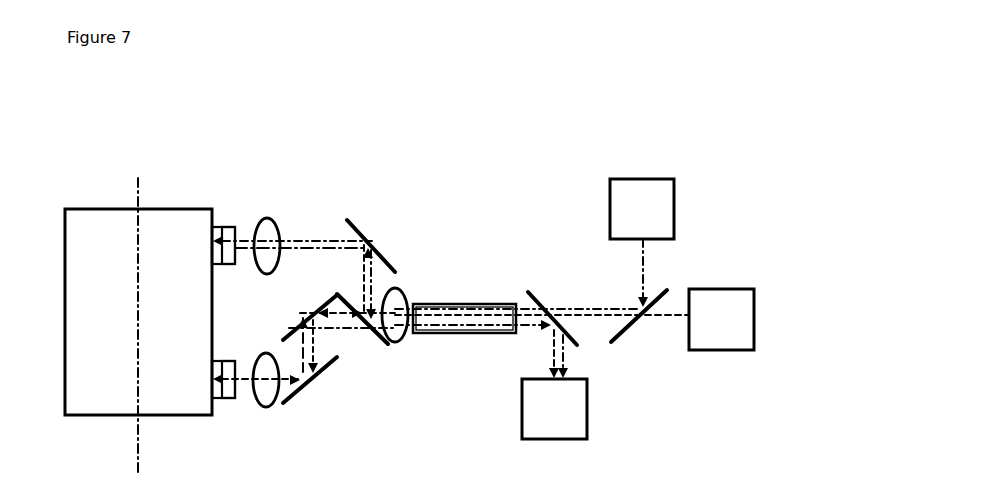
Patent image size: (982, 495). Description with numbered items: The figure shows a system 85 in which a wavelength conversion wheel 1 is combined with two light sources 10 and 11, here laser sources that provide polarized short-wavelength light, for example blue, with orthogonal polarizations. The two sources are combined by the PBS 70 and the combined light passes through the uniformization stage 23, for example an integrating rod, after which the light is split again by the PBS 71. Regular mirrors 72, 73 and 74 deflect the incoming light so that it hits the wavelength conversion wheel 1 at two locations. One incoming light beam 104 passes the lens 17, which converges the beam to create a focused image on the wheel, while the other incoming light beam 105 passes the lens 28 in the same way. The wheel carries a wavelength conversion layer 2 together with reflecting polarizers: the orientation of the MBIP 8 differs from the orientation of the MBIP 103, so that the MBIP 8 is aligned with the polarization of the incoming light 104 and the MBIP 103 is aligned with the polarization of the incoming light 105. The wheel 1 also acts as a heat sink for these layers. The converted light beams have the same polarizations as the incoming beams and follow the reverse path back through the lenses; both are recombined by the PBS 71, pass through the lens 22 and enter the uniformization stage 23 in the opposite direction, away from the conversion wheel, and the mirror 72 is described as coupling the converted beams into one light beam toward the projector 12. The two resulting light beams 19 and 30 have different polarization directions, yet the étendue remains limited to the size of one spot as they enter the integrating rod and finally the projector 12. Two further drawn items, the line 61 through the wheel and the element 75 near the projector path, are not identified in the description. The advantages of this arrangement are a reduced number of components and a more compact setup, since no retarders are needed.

The system 85 is at (400, 120).
The rotation axis 61 is at (138, 178).
The wavelength conversion wheel 1 is at (180, 208).
The wavelength conversion layer 2 is at (222, 227).
The reflecting polarizing layer 8 is at (235, 236).
The MBIP 103 is at (229, 404).
The lens 17 is at (268, 217).
The incoming light 104 is at (291, 240).
The mirror 72 is at (353, 213).
The mirror 73 is at (283, 340).
The PBS 71 is at (376, 337).
The mirror 74 is at (307, 387).
The incoming light 105 is at (243, 375).
The lens 28 is at (266, 408).
The lens 22 is at (396, 288).
The uniformization stage 23 is at (434, 303).
The beam splitter 75 is at (541, 296).
The PBS 70 is at (628, 328).
The light source 10 is at (667, 179).
The light source 11 is at (748, 289).
The light beam 30 is at (554, 352).
The light beam 19 is at (566, 346).
The projector 12 is at (522, 422).